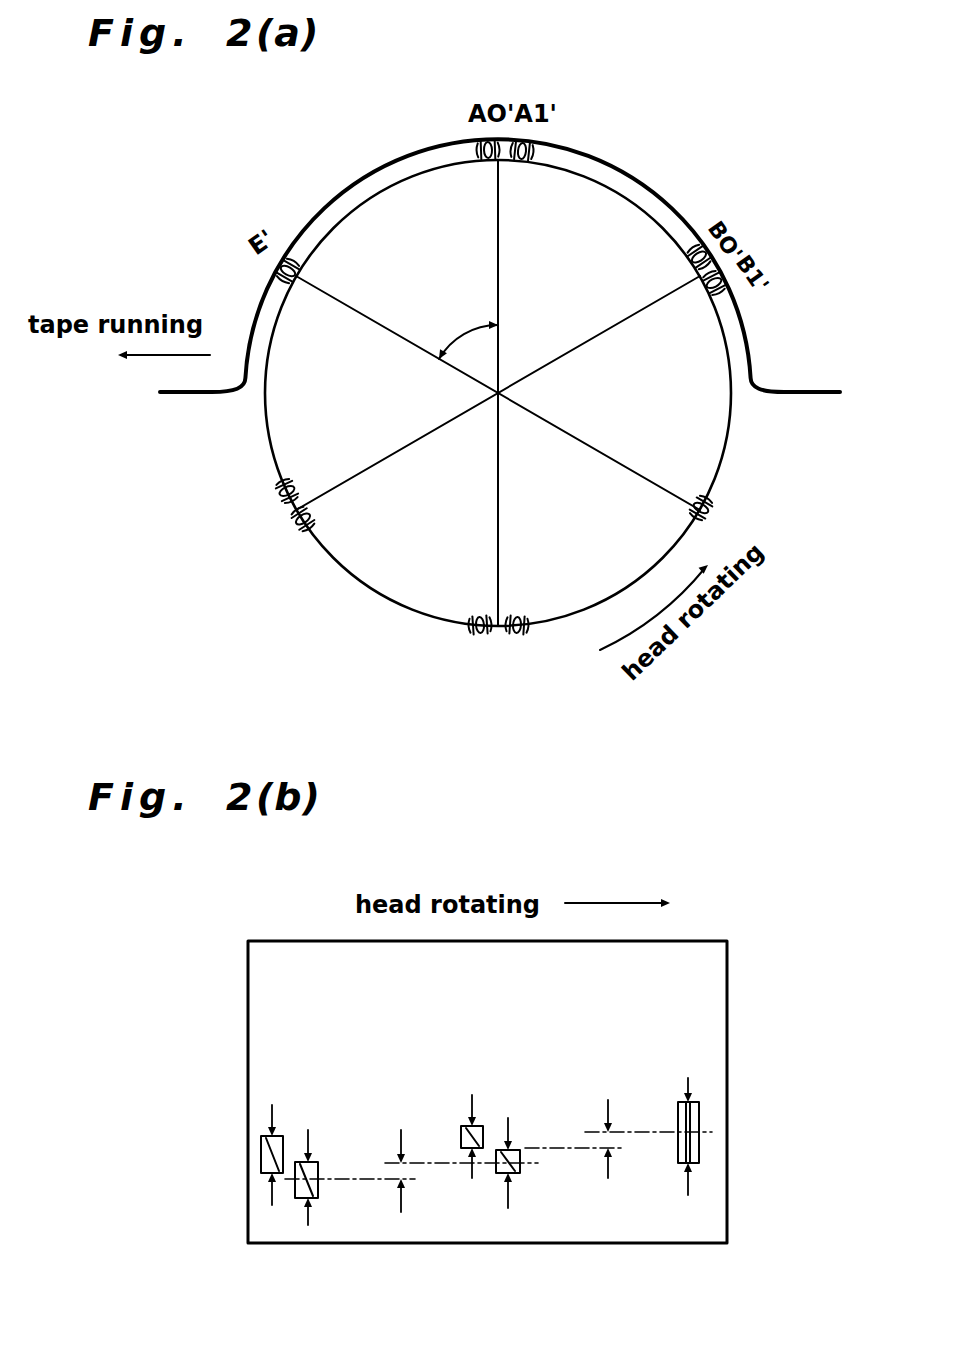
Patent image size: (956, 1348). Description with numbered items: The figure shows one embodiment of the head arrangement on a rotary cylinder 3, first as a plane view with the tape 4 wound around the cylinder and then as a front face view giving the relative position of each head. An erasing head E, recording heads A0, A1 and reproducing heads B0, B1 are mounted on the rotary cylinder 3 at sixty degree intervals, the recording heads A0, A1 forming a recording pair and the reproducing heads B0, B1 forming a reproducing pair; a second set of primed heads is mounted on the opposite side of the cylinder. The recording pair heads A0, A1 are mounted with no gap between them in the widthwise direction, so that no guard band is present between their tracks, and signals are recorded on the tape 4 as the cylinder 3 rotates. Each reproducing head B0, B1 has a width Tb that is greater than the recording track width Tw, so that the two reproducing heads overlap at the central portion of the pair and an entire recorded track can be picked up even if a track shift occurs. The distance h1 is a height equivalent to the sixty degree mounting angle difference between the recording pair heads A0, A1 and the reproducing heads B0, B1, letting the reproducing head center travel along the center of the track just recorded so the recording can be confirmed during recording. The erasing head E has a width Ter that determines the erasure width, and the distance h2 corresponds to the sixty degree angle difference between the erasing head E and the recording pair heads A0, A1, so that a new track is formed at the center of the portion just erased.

In FIG. 2A, the rotary cylinder 3 is at (370, 590).
In FIG. 2B, the rotary cylinder 3 is at (728, 992).
In FIG. 2A, the tape 4 is at (815, 393).
In FIG. 2A, the recording head A0 is at (525, 649).
In FIG. 2B, the recording head A0 is at (520, 1163).
In FIG. 2A, the recording head A1 is at (477, 649).
In FIG. 2B, the recording head A1 is at (461, 1148).
In FIG. 2A, the reproducing head B0 is at (291, 535).
In FIG. 2B, the reproducing head B0 is at (318, 1180).
In FIG. 2A, the reproducing head B1 is at (269, 500).
In FIG. 2B, the reproducing head B1 is at (258, 1160).
In FIG. 2A, the erasing head E is at (715, 515).
In FIG. 2B, the erasing head E is at (678, 1163).
In FIG. 2B, the recording track width Tw is at (492, 1137).
In FIG. 2B, the reproducing head width Tb is at (292, 1151).
In FIG. 2B, the erasure width Ter is at (688, 1121).
In FIG. 2B, the height difference between recording and reproducing heads h1 is at (404, 1158).
In FIG. 2B, the height difference between erasing and recording heads h2 is at (612, 1123).